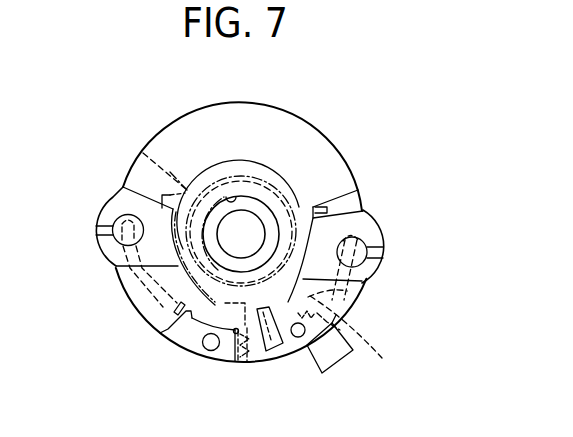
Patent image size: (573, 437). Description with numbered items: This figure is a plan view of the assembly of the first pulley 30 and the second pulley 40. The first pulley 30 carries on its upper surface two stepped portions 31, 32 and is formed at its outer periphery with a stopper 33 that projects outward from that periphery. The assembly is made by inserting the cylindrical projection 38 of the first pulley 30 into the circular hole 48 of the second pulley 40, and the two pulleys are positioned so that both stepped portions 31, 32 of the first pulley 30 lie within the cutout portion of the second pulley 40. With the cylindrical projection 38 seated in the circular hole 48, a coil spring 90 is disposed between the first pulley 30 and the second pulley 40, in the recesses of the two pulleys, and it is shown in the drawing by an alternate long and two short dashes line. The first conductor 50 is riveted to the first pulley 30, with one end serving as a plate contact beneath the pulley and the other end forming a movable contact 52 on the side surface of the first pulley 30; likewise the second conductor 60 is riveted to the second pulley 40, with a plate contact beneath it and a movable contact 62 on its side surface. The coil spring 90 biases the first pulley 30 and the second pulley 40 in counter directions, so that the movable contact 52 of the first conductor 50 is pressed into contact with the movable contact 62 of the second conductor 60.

The first pulley 30 is at (318, 296).
The stepped portion 31 is at (268, 343).
The stepped portion 32 is at (358, 217).
The stopper 33 is at (332, 358).
The cylindrical projection 38 is at (268, 208).
The second pulley 40 is at (167, 142).
The circular hole 48 is at (238, 195).
The first conductor 50 is at (428, 376).
The movable contact 52 is at (240, 368).
The second conductor 60 is at (188, 338).
The movable contact 62 is at (237, 368).
The coil spring 90 is at (270, 168).